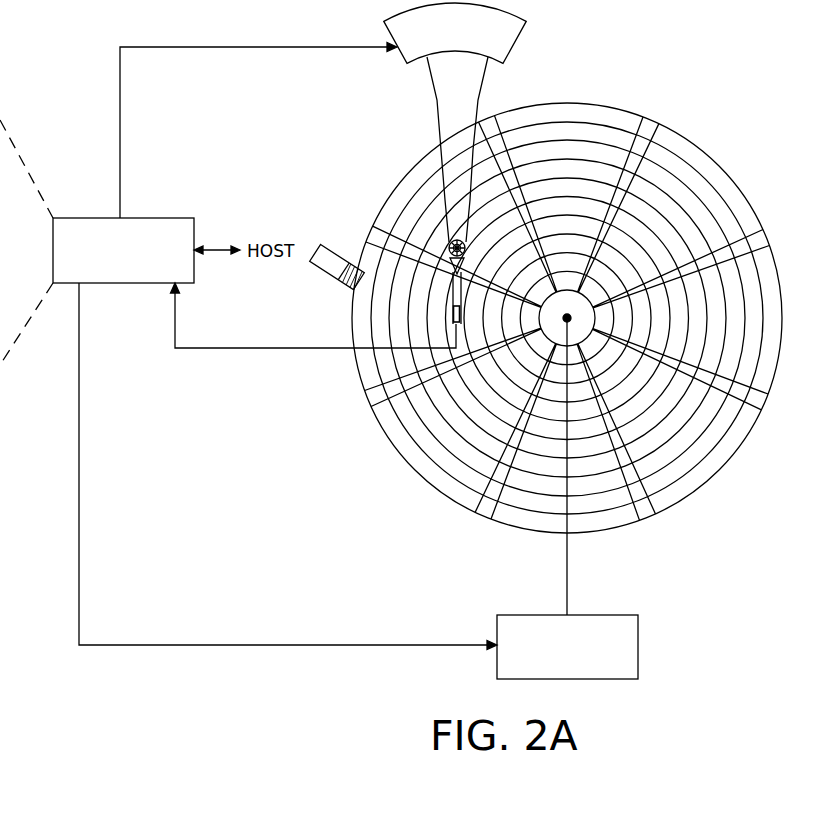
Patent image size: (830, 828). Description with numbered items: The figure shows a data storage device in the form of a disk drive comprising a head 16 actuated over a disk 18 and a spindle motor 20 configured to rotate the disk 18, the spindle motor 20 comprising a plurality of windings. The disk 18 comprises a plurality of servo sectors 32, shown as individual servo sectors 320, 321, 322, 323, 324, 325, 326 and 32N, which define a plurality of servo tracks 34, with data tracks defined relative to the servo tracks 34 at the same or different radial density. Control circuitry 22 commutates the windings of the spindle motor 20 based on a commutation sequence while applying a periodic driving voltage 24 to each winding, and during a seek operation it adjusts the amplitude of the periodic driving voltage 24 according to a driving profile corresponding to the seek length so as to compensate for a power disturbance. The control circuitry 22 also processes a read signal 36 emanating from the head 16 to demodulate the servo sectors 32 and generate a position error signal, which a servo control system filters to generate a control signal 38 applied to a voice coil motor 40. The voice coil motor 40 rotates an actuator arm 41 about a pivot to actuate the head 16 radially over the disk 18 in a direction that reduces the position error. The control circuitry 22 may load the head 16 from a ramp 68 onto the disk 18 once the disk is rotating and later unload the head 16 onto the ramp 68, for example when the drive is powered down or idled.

The head 16 is at (451, 322).
The disk 18 is at (567, 297).
The spindle motor 20 is at (638, 645).
The control circuitry 22 is at (126, 283).
The periodic driving voltage 24 is at (79, 460).
The servo sectors 32 is at (572, 322).
The servo sector 320 is at (653, 124).
The servo sector 321 is at (764, 240).
The servo sector 322 is at (767, 400).
The servo sector 323 is at (639, 514).
The servo sector 324 is at (483, 512).
The servo sector 325 is at (372, 404).
The servo sector 326 is at (367, 230).
The servo sector 32N is at (497, 124).
The servo tracks 34 is at (566, 128).
The read signal 36 is at (255, 348).
The control signal 38 is at (120, 118).
The voice coil motor 40 is at (398, 57).
The actuator arm 41 is at (438, 128).
The ramp 68 is at (318, 270).